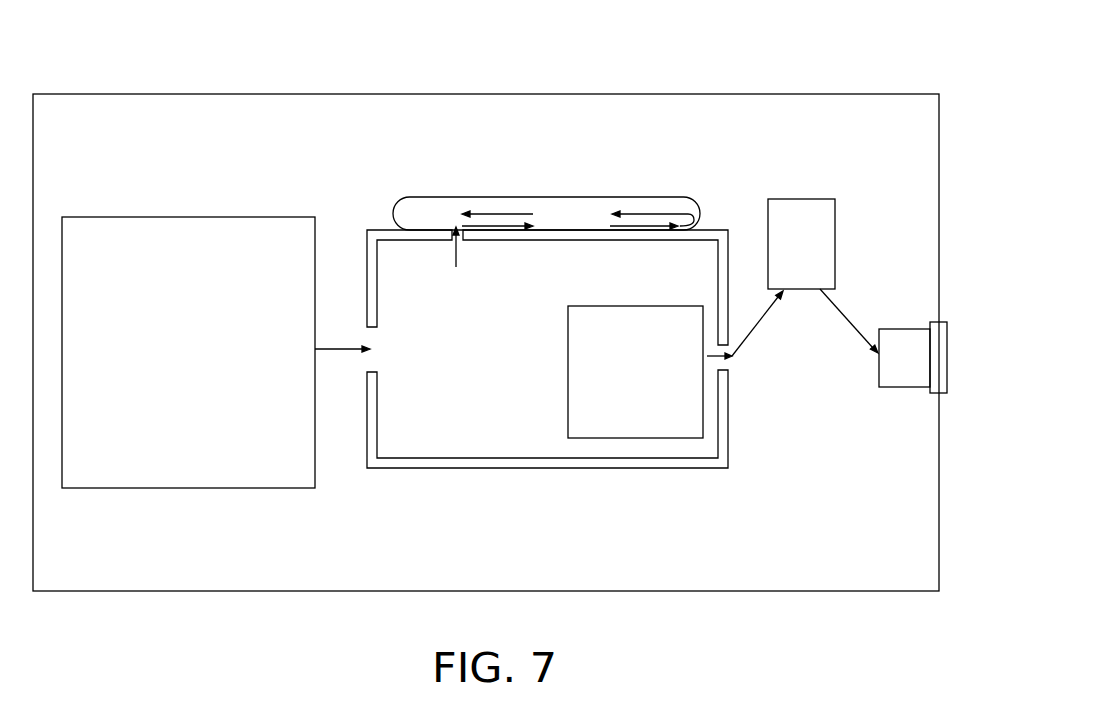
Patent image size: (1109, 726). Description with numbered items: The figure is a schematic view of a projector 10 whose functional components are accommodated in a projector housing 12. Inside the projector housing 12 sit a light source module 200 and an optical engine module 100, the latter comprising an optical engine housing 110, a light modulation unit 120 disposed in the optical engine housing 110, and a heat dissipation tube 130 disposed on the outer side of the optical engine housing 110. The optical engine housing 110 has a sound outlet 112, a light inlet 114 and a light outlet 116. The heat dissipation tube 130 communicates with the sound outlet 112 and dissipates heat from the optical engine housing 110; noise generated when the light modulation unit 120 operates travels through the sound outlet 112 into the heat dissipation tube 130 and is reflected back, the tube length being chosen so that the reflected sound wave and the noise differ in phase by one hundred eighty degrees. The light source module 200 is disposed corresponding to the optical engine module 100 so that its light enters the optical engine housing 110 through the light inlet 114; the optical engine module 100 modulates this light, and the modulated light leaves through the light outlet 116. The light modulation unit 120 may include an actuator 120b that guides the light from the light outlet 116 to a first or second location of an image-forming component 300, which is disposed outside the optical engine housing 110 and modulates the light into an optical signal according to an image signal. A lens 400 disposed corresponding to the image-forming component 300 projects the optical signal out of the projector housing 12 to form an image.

The projector 10 is at (90, 44).
The projector housing 12 is at (833, 93).
The optical engine module 100 is at (553, 337).
The optical engine housing 110 is at (597, 468).
The sound outlet 112 is at (454, 229).
The light inlet 114 is at (365, 363).
The light outlet 116 is at (727, 363).
The light modulation unit 120 is at (635, 372).
The actuator 120b is at (695, 391).
The heat dissipation tube 130 is at (572, 197).
The light source module 200 is at (210, 364).
The image-forming component 300 is at (822, 260).
The lens 400 is at (930, 372).